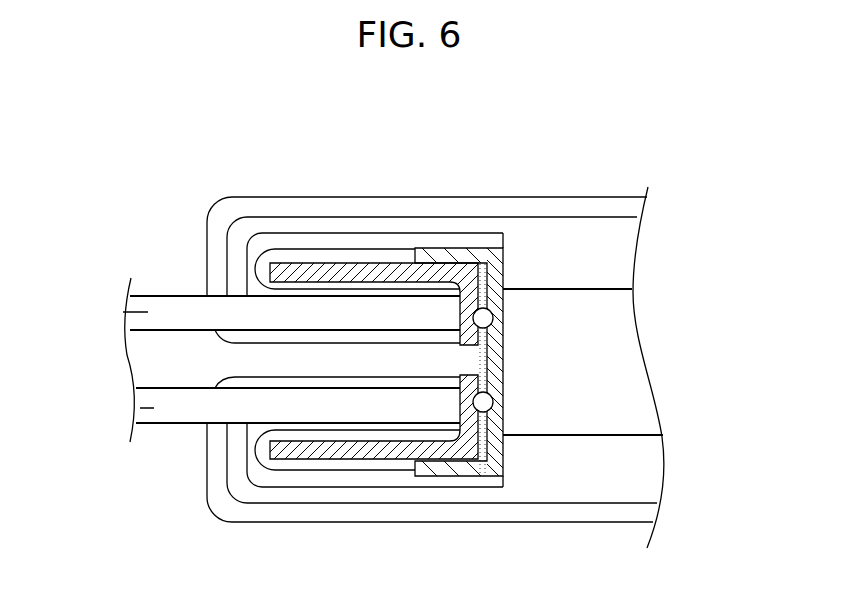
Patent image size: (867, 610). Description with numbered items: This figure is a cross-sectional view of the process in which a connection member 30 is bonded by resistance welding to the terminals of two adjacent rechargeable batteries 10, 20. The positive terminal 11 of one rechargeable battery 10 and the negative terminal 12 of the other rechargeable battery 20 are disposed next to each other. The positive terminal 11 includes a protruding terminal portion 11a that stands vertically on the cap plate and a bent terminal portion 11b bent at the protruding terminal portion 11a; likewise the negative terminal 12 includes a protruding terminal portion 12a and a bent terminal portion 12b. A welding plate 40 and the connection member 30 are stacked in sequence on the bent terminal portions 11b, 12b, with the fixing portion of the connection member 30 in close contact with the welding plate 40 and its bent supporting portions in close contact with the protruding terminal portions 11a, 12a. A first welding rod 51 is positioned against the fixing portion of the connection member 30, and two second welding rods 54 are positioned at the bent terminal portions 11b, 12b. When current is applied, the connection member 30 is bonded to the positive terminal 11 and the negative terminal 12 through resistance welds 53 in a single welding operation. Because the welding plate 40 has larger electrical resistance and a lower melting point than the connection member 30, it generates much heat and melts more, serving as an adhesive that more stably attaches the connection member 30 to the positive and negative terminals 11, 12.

The rechargeable battery 10 is at (398, 522).
The rechargeable battery 20 is at (308, 197).
The positive terminal 11 is at (336, 486).
The protruding terminal portion 11a is at (322, 452).
The bent terminal portion 11b is at (465, 448).
The negative terminal 12 is at (356, 243).
The protruding terminal portion 12a is at (384, 268).
The bent terminal portion 12b is at (464, 275).
The connection member 30 is at (503, 269).
The welding plate 40 is at (503, 440).
The first welding rod 51 is at (622, 346).
The resistance weld 53 is at (493, 318).
The second welding rod 54 is at (133, 406).